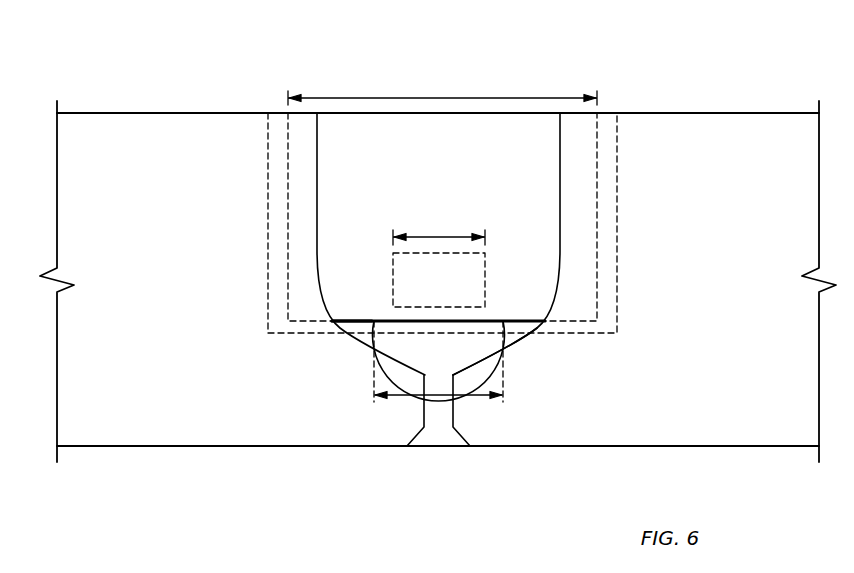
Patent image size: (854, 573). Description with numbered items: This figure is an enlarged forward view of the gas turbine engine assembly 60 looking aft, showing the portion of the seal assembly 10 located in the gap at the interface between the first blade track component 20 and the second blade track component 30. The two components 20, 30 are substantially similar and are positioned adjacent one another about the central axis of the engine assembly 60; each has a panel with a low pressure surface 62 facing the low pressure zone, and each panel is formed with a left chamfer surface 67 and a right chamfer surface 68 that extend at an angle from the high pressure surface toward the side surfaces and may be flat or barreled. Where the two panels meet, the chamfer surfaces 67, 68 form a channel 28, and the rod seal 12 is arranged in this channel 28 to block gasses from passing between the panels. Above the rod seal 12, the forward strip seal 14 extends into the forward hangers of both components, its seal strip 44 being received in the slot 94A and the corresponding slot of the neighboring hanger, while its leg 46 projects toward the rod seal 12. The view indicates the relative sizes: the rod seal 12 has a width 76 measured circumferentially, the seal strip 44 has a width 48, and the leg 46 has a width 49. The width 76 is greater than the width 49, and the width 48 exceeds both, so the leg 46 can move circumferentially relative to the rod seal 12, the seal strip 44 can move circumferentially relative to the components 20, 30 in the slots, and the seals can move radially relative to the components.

The seal assembly 10 is at (157, 89).
The rod seal 12 is at (507, 342).
The forward strip seal 14 is at (366, 178).
The first blade track component 20 is at (187, 449).
The channel 28 is at (350, 341).
The second blade track component 30 is at (775, 449).
The seal strip 44 is at (515, 215).
The leg 46 is at (488, 309).
The width of the seal strip 48 is at (484, 97).
The width of the leg 49 is at (439, 236).
The gas turbine engine assembly 60 is at (706, 83).
The low pressure surface 62 is at (112, 447).
The left chamfer surface 67 is at (500, 357).
The right chamfer surface 68 is at (365, 340).
The width of the rod seal 76 is at (459, 398).
The slot 94A is at (617, 140).